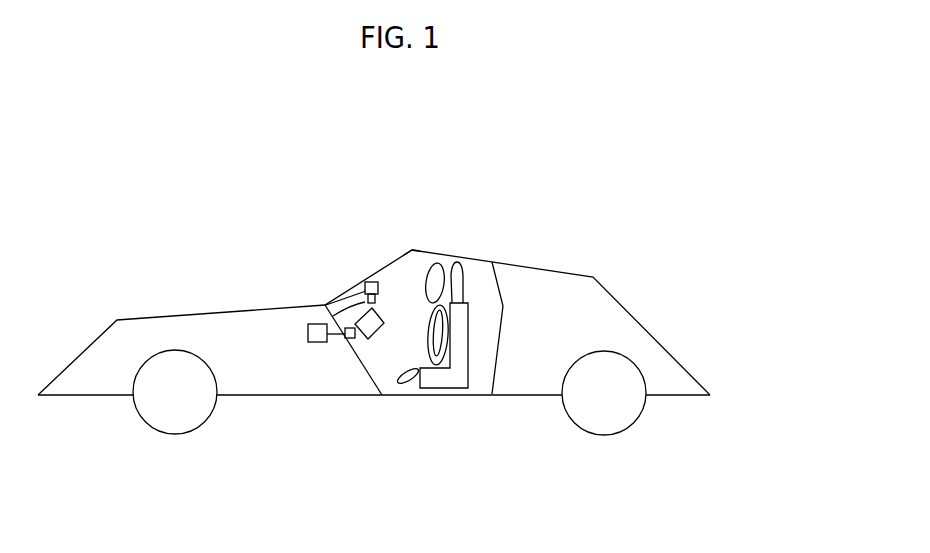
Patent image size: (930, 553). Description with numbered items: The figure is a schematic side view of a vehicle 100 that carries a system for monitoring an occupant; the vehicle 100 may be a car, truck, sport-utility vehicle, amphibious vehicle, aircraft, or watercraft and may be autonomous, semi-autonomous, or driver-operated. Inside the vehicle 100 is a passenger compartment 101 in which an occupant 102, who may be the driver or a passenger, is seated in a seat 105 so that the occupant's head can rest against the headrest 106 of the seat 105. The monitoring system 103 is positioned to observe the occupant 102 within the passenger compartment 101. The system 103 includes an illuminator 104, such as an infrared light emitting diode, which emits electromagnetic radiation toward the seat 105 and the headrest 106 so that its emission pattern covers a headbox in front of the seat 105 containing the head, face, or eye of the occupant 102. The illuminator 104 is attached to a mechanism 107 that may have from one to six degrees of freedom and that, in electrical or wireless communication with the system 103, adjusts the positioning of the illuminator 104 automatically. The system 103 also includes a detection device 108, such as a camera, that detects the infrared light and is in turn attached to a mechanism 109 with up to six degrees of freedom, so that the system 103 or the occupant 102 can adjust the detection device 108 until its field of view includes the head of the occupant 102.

The vehicle 100 is at (581, 254).
The passenger compartment 101 is at (443, 265).
The occupant 102 is at (412, 250).
The system 103 is at (308, 327).
The illuminator 104 is at (365, 284).
The seat 105 is at (465, 355).
The headrest 106 is at (467, 283).
The mechanism 107 is at (380, 304).
The detection device 108 is at (367, 340).
The mechanism 109 is at (345, 338).